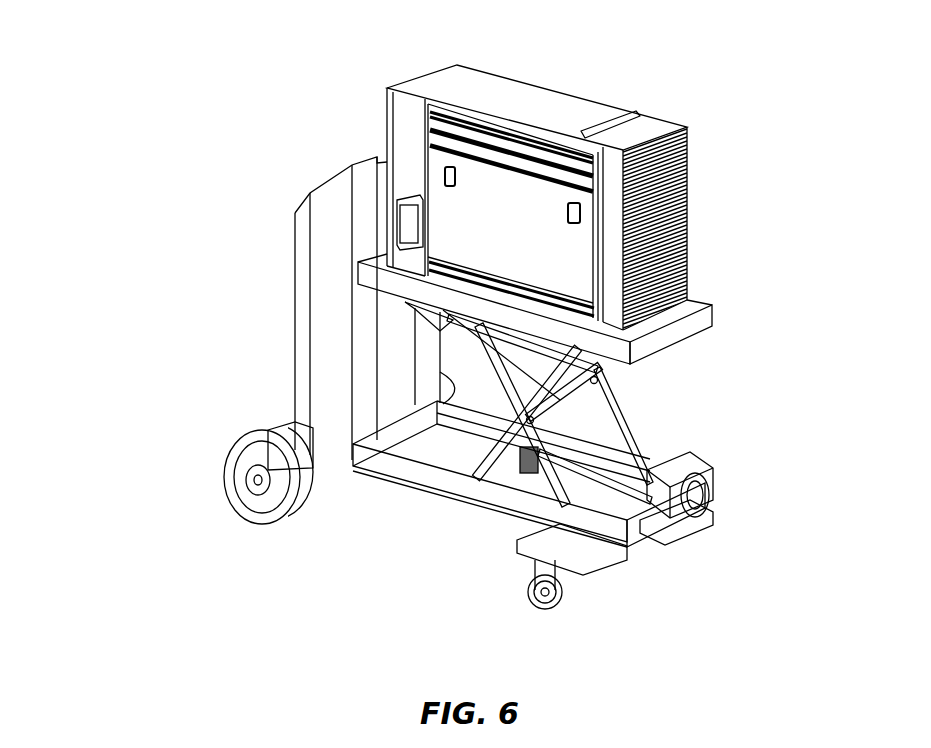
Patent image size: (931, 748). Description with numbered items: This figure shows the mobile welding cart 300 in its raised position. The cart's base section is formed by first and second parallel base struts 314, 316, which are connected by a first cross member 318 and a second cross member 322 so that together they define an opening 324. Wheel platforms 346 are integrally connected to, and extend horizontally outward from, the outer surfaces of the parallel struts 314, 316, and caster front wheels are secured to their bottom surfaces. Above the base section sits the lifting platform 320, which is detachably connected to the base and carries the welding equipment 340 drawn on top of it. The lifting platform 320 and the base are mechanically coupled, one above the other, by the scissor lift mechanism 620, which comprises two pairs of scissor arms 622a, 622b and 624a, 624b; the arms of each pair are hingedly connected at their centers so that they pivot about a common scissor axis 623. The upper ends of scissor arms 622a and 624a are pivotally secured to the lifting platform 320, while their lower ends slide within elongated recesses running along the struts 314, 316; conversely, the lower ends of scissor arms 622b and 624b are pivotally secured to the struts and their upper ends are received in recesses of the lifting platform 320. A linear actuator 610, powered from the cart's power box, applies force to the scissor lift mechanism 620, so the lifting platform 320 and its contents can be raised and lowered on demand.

The mobile welding cart 300 is at (245, 213).
The power unit 340 is at (653, 128).
The lifting platform 320 is at (693, 303).
The linear actuator 610 is at (410, 313).
The scissor lift mechanism 620 is at (488, 442).
The scissor arm 622a is at (525, 418).
The scissor arm 622b is at (563, 490).
The scissor axis 623 is at (528, 425).
The scissor arm 624a is at (597, 372).
The scissor arm 624b is at (633, 482).
The second cross member 322 is at (397, 433).
The first parallel base strut 314 is at (433, 480).
The opening 324 is at (633, 567).
The wheel platform 346 is at (577, 550).
The second parallel base strut 316 is at (680, 493).
The first cross member 318 is at (680, 540).